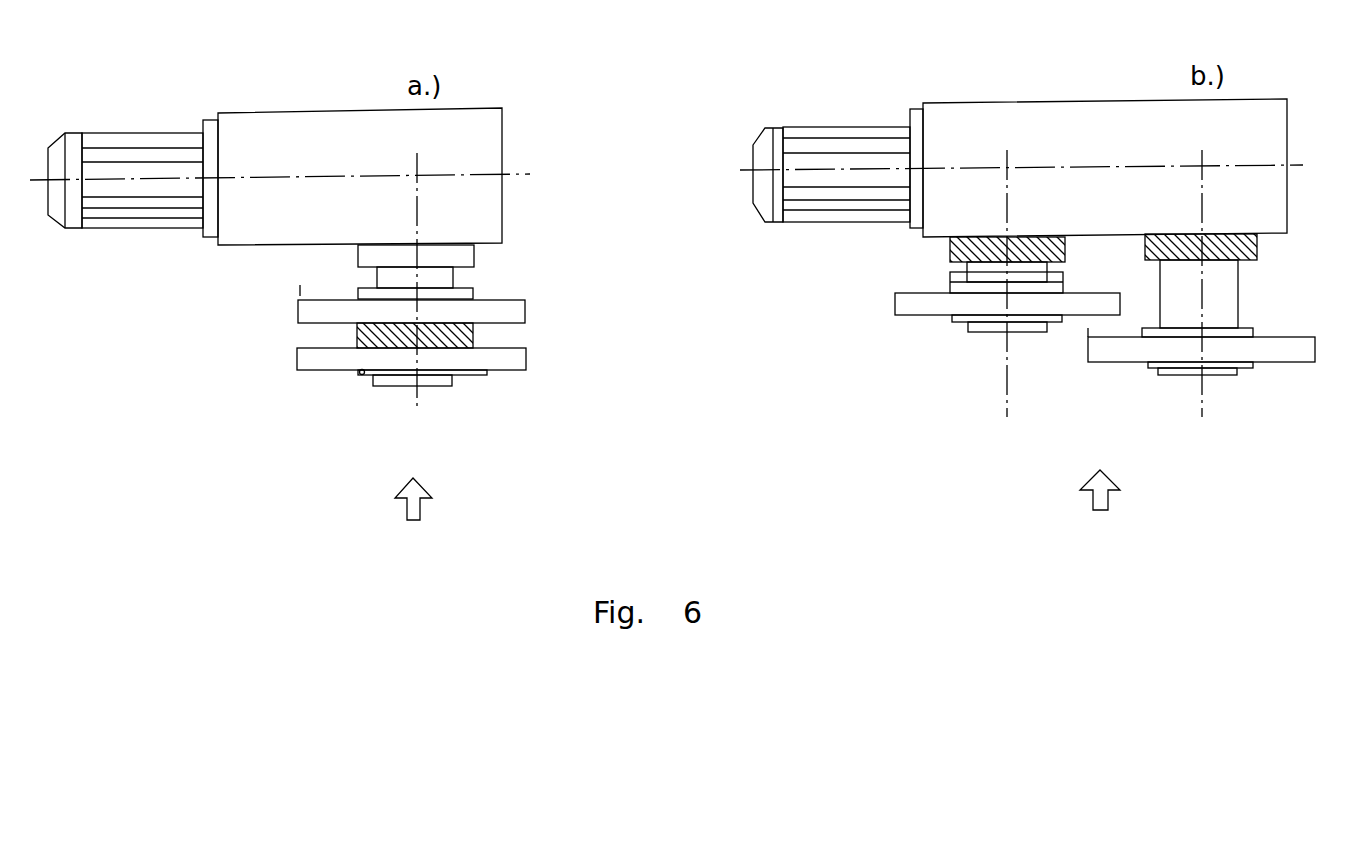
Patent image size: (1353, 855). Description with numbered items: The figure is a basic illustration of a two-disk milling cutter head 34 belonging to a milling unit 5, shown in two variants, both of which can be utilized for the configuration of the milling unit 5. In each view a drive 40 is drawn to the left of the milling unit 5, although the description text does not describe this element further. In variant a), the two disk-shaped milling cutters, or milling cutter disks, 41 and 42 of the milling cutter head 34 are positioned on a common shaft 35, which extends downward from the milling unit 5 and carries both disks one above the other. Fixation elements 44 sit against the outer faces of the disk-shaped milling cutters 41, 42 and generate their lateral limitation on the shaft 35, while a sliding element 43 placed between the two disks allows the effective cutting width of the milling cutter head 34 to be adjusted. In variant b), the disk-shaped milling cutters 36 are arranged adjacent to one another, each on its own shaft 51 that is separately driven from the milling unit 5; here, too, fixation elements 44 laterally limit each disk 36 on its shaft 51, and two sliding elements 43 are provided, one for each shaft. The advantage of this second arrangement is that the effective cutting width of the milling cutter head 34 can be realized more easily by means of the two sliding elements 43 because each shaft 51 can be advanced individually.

The milling unit 5 is at (474, 245).
The milling cutter head 34 is at (758, 515).
The common shaft 35 is at (438, 380).
The disk-shaped milling cutters 36 is at (908, 308).
The motor 40 is at (119, 209).
The disk-shaped milling cutter 41 is at (515, 306).
The disk-shaped milling cutter 42 is at (515, 357).
The sliding elements 43 is at (365, 339).
The fixation elements 44 is at (365, 296).
The shafts 51 is at (1102, 300).